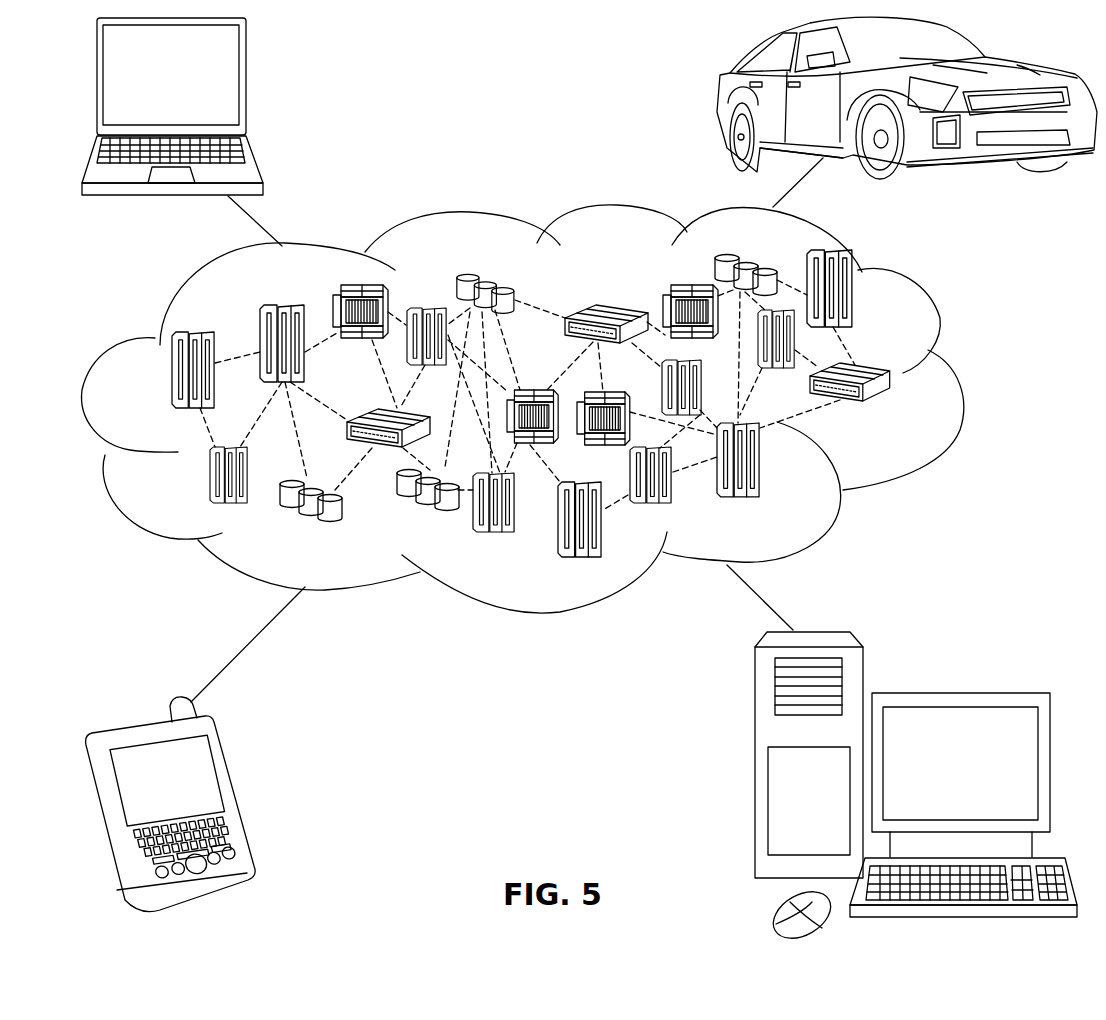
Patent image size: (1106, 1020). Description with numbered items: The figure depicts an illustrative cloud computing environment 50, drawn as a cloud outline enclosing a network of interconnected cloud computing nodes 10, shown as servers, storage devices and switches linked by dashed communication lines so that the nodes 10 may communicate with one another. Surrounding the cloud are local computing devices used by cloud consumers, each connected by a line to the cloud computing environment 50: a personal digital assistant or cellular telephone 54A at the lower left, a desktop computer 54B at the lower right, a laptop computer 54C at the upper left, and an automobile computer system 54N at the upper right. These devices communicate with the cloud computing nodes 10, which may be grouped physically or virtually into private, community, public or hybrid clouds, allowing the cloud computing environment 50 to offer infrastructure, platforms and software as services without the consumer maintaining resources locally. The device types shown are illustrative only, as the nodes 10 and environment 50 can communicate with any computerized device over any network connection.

The cloud computing nodes 10 is at (895, 413).
The cloud computing environment 50 is at (960, 380).
The personal digital assistant or cellular telephone 54A is at (233, 797).
The desktop computer 54B is at (958, 692).
The laptop computer 54C is at (247, 85).
The automobile computer system 54N is at (720, 95).